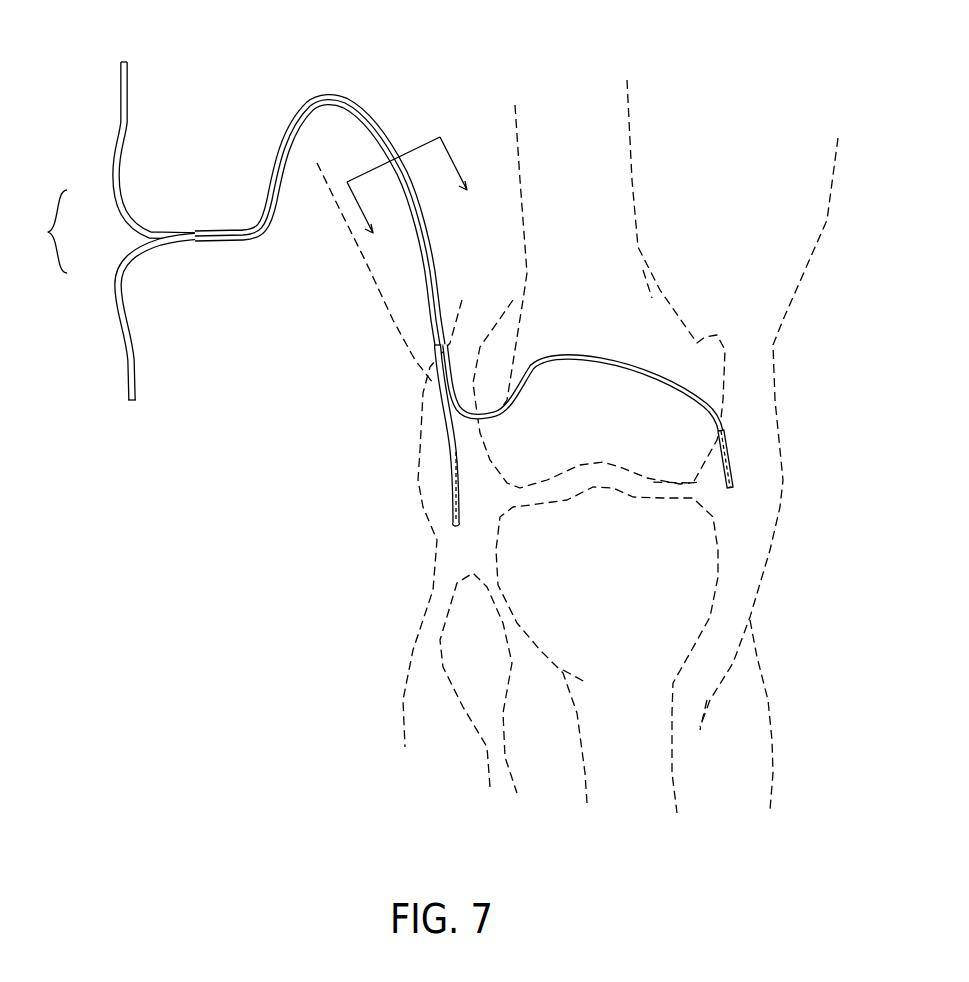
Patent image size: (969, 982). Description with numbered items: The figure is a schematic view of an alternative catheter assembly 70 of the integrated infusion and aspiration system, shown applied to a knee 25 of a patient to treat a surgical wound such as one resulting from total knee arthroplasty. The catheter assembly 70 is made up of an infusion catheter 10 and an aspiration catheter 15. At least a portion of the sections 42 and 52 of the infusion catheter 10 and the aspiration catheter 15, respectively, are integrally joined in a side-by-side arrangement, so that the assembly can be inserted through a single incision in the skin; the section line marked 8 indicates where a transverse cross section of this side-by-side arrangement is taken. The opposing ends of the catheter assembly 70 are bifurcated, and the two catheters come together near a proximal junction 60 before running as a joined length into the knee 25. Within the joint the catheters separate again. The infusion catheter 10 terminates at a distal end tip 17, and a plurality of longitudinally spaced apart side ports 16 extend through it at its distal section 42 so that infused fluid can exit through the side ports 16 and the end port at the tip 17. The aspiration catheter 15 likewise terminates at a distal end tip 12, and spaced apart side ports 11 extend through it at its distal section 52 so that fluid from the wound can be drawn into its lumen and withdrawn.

The section line of FIG. 8 is at (417, 207).
The infusion catheter 10 is at (111, 149).
The side ports 11 is at (728, 447).
The distal end tip 12 is at (732, 488).
The aspiration catheter 15 is at (128, 333).
The side ports 16 is at (453, 478).
The distal end tip 17 is at (455, 528).
The knee 25 is at (733, 685).
The distal section 42 is at (363, 108).
The distal section 52 is at (343, 107).
The proximal junction 60 is at (177, 245).
The catheter assembly 70 is at (42, 231).